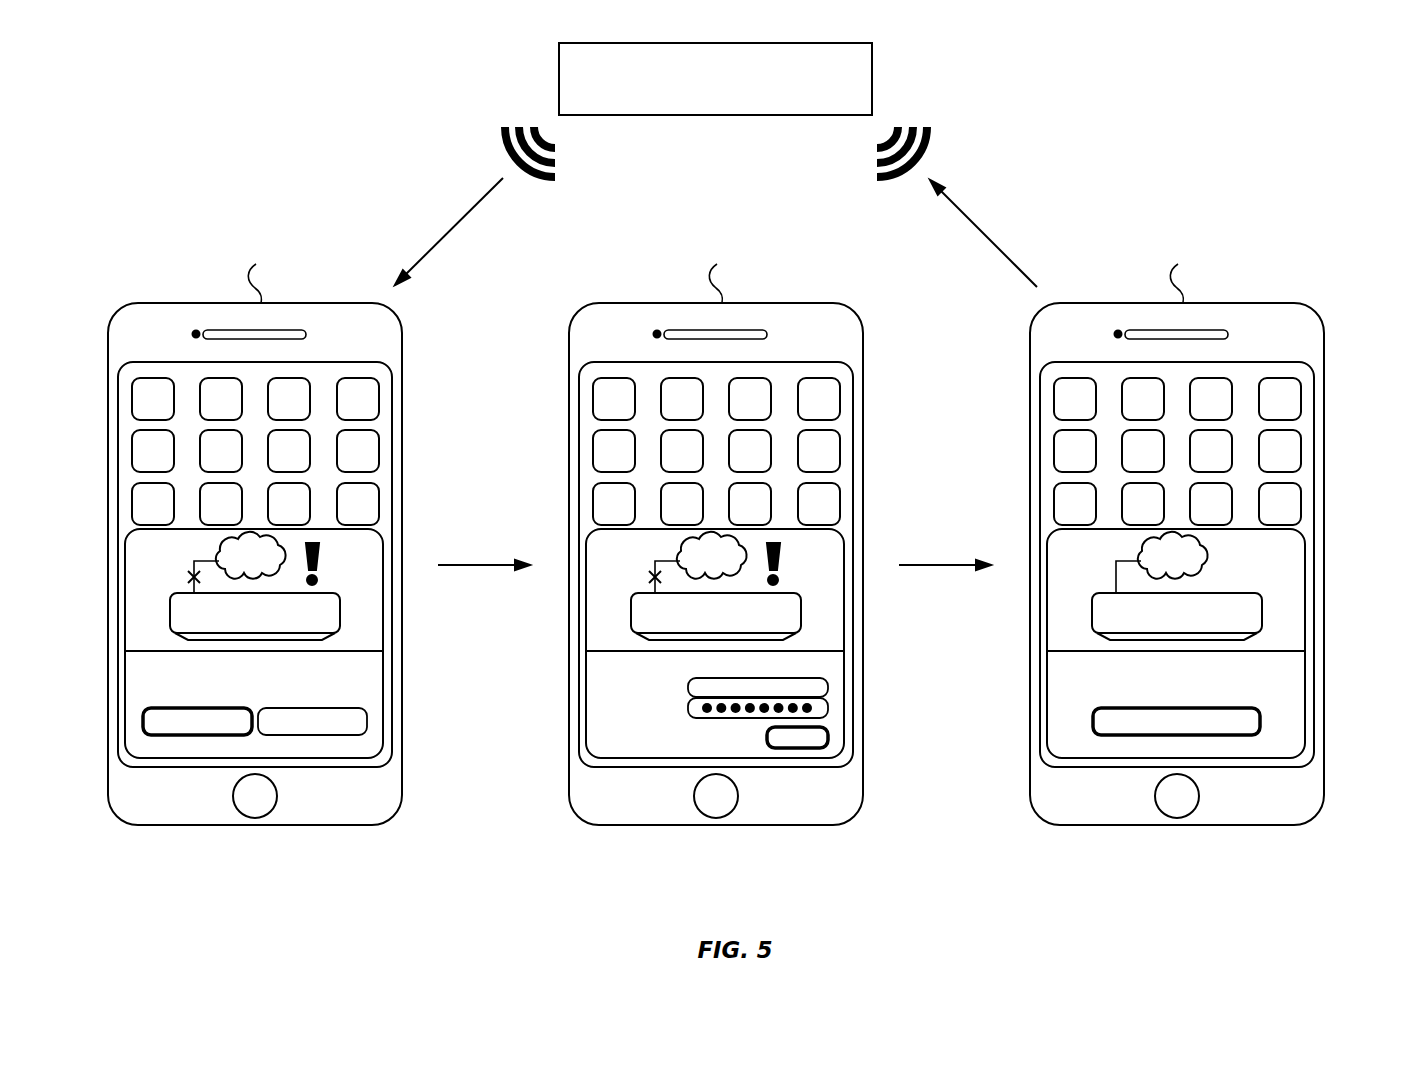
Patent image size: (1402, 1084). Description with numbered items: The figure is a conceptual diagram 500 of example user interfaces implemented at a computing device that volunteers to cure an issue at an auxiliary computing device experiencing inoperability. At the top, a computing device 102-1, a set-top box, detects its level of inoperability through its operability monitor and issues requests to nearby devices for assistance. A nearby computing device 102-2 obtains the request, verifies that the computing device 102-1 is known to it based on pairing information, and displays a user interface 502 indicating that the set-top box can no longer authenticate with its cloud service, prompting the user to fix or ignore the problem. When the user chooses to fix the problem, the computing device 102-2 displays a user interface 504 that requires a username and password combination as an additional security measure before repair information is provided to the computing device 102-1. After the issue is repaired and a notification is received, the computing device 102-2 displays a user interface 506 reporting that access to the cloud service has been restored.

The conceptual diagram 500 is at (1272, 80).
The computing device 102-1 is at (808, 91).
The computing device 102-2 is at (716, 518).
The user interface 502 is at (328, 757).
The user interface 504 is at (789, 757).
The user interface 506 is at (1250, 757).